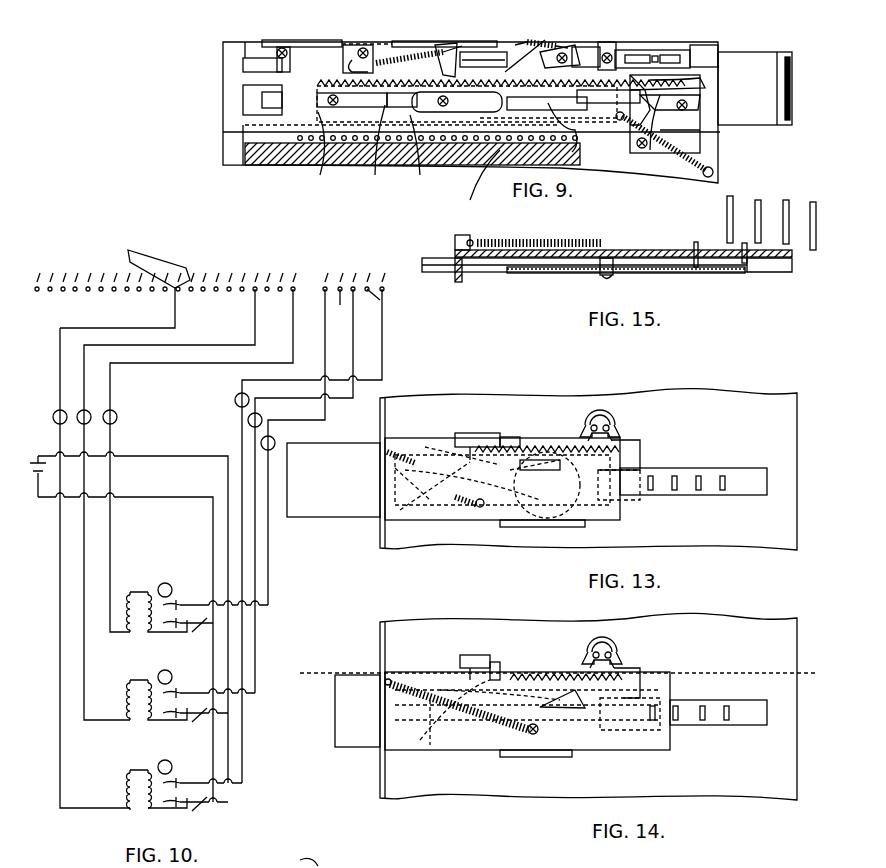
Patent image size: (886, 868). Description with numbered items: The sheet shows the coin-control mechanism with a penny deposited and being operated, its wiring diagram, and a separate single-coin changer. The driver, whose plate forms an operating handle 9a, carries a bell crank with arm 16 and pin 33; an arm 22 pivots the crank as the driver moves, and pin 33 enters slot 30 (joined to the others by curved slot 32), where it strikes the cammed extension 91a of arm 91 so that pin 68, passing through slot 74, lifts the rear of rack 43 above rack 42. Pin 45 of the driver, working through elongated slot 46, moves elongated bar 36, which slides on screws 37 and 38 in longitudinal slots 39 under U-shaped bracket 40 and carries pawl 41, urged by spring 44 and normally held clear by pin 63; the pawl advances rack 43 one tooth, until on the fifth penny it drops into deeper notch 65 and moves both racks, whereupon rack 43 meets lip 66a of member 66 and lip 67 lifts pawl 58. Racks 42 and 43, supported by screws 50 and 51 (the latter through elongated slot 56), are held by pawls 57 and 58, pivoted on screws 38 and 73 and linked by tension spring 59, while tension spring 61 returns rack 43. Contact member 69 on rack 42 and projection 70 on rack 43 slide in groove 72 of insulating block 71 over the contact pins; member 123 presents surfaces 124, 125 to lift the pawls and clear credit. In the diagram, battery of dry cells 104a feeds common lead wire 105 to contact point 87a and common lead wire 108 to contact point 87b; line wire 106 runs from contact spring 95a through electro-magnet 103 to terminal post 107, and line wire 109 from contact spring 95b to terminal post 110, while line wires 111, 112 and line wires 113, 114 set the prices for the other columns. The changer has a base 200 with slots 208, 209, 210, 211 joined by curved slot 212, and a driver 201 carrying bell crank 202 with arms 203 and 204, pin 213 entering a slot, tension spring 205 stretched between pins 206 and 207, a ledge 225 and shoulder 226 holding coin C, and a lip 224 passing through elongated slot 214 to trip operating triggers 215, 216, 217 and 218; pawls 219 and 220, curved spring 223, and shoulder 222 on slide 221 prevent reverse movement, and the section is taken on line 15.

In FIG. 9, the operating handle 9a is at (742, 40).
In FIG. 9, the arm of bell crank 16 is at (385, 7).
In FIG. 9, the arm 22 is at (400, 45).
In FIG. 9, the slot 30 is at (665, 114).
In FIG. 9, the curved slot 32 is at (688, 135).
In FIG. 9, the pin 33 is at (668, 97).
In FIG. 9, the elongated bar 36 is at (622, 27).
In FIG. 9, the screw 37 is at (586, 47).
In FIG. 9, the screw 38 is at (483, 42).
In FIG. 9, the longitudinal slots 39 is at (490, 58).
In FIG. 9, the U-shaped bracket 40 is at (630, 50).
In FIG. 9, the pawl 41 is at (543, 40).
In FIG. 10, the pawl 41 is at (285, 866).
In FIG. 9, the rack 42 is at (426, 153).
In FIG. 9, the rack 43 is at (327, 151).
In FIG. 9, the spring 44 is at (565, 45).
In FIG. 9, the pin 45 is at (658, 57).
In FIG. 9, the elongated slot 46 is at (705, 55).
In FIG. 9, the screw 50 is at (448, 101).
In FIG. 9, the screw 51 is at (332, 100).
In FIG. 9, the elongated slot 56 is at (395, 93).
In FIG. 9, the pawl 57 is at (452, 60).
In FIG. 9, the pawl 58 is at (356, 58).
In FIG. 9, the tension spring 59 is at (405, 47).
In FIG. 9, the tension spring 61 is at (700, 178).
In FIG. 9, the pin 63 is at (530, 97).
In FIG. 9, the deeper notch 65 is at (565, 97).
In FIG. 10, the deeper notch 65 is at (348, 850).
In FIG. 9, the member 66 is at (237, 60).
In FIG. 9, the lip 66a is at (280, 100).
In FIG. 9, the lip 67 is at (372, 45).
In FIG. 9, the pin 68 is at (480, 185).
In FIG. 9, the electrical contact member 69 is at (470, 155).
In FIG. 10, the electrical contact member 69 is at (178, 260).
In FIG. 9, the projection 70 is at (518, 140).
In FIG. 9, the block 71 is at (290, 165).
In FIG. 9, the longitudinal groove 72 is at (258, 135).
In FIG. 9, the screw 73 is at (368, 60).
In FIG. 9, the slot 74 is at (580, 130).
In FIG. 9, the arm 91 is at (385, 150).
In FIG. 9, the cammed extension 91a is at (660, 80).
In FIG. 9, the member 123 is at (300, 40).
In FIG. 9, the operative surface 124 is at (460, 45).
In FIG. 9, the operative surface 125 is at (340, 44).
In FIG. 10, the electro-magnet 103 is at (125, 788).
In FIG. 10, the battery of dry cells 104a is at (36, 478).
In FIG. 10, the common lead wire 105 is at (148, 456).
In FIG. 10, the line wire 106 is at (60, 362).
In FIG. 10, the terminal post 107 is at (55, 410).
In FIG. 10, the common lead wire 108 is at (152, 497).
In FIG. 10, the line wire 109 is at (380, 352).
In FIG. 10, the terminal post 110 is at (235, 400).
In FIG. 10, the line wire 111 is at (132, 352).
In FIG. 10, the line wire 112 is at (339, 394).
In FIG. 10, the line wire 113 is at (148, 378).
In FIG. 10, the line wire 114 is at (325, 350).
In FIG. 10, the contact spring 95a is at (170, 808).
In FIG. 10, the contact spring 95b is at (178, 778).
In FIG. 10, the contact point 87a is at (180, 808).
In FIG. 10, the contact point 87b is at (185, 780).
In FIG. 14, the section line 15 is at (368, 661).
In FIG. 15, the base 200 is at (714, 250).
In FIG. 13, the base 200 is at (725, 396).
In FIG. 14, the base 200 is at (748, 645).
In FIG. 15, the driver 201 is at (722, 280).
In FIG. 13, the driver 201 is at (625, 526).
In FIG. 14, the driver 201 is at (598, 755).
In FIG. 15, the bell crank 202 is at (575, 272).
In FIG. 13, the bell crank 202 is at (490, 500).
In FIG. 14, the bell crank 202 is at (546, 702).
In FIG. 15, the arm 203 is at (640, 262).
In FIG. 13, the arm 203 is at (530, 460).
In FIG. 14, the arm 203 is at (590, 718).
In FIG. 15, the arm 204 is at (548, 270).
In FIG. 13, the arm 204 is at (445, 495).
In FIG. 14, the arm 204 is at (500, 695).
In FIG. 15, the tension spring 205 is at (525, 243).
In FIG. 13, the tension spring 205 is at (398, 470).
In FIG. 14, the tension spring 205 is at (478, 725).
In FIG. 15, the pin 206 is at (605, 250).
In FIG. 13, the pin 206 is at (472, 508).
In FIG. 14, the pin 206 is at (512, 735).
In FIG. 15, the pin 207 is at (470, 240).
In FIG. 13, the pin 207 is at (385, 452).
In FIG. 14, the pin 207 is at (390, 680).
In FIG. 13, the slot 208 is at (460, 510).
In FIG. 14, the slot 208 is at (430, 725).
In FIG. 13, the slot 209 is at (450, 445).
In FIG. 14, the slot 209 is at (445, 735).
In FIG. 13, the slot 210 is at (473, 440).
In FIG. 14, the slot 210 is at (462, 656).
In FIG. 13, the slot 211 is at (510, 437).
In FIG. 14, the slot 211 is at (496, 662).
In FIG. 13, the curved slot 212 is at (440, 440).
In FIG. 14, the curved slot 212 is at (400, 720).
In FIG. 13, the pin 213 is at (400, 510).
In FIG. 14, the pin 213 is at (470, 665).
In FIG. 13, the elongated slot 214 is at (745, 470).
In FIG. 14, the elongated slot 214 is at (748, 725).
In FIG. 15, the operating trigger 215 is at (735, 210).
In FIG. 13, the operating trigger 215 is at (652, 490).
In FIG. 14, the operating trigger 215 is at (652, 722).
In FIG. 15, the operating trigger 216 is at (762, 205).
In FIG. 13, the operating trigger 216 is at (676, 490).
In FIG. 14, the operating trigger 216 is at (676, 722).
In FIG. 15, the operating trigger 217 is at (790, 205).
In FIG. 13, the operating trigger 217 is at (699, 490).
In FIG. 14, the operating trigger 217 is at (702, 722).
In FIG. 15, the operating trigger 218 is at (812, 260).
In FIG. 13, the operating trigger 218 is at (724, 490).
In FIG. 14, the operating trigger 218 is at (726, 722).
In FIG. 13, the pawl 219 is at (585, 413).
In FIG. 14, the pawl 219 is at (590, 642).
In FIG. 13, the pawl 220 is at (615, 440).
In FIG. 14, the pawl 220 is at (620, 668).
In FIG. 15, the slide 221 is at (636, 242).
In FIG. 13, the slide 221 is at (540, 425).
In FIG. 14, the slide 221 is at (543, 665).
In FIG. 13, the shoulder 222 is at (604, 425).
In FIG. 14, the shoulder 222 is at (606, 652).
In FIG. 13, the curved spring 223 is at (610, 410).
In FIG. 14, the curved spring 223 is at (615, 640).
In FIG. 15, the lip 224 is at (750, 265).
In FIG. 13, the lip 224 is at (620, 485).
In FIG. 14, the lip 224 is at (668, 708).
In FIG. 13, the ledge 225 is at (556, 528).
In FIG. 14, the ledge 225 is at (552, 757).
In FIG. 15, the shoulder 226 is at (690, 272).
In FIG. 13, the shoulder 226 is at (618, 460).
In FIG. 14, the shoulder 226 is at (628, 700).
In FIG. 13, the coin C is at (547, 515).